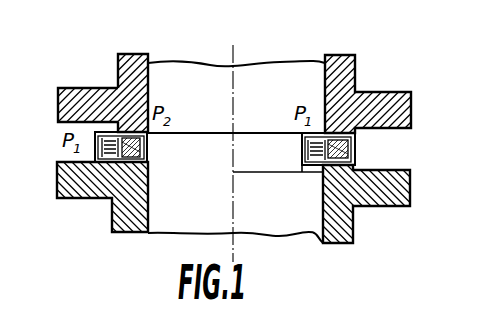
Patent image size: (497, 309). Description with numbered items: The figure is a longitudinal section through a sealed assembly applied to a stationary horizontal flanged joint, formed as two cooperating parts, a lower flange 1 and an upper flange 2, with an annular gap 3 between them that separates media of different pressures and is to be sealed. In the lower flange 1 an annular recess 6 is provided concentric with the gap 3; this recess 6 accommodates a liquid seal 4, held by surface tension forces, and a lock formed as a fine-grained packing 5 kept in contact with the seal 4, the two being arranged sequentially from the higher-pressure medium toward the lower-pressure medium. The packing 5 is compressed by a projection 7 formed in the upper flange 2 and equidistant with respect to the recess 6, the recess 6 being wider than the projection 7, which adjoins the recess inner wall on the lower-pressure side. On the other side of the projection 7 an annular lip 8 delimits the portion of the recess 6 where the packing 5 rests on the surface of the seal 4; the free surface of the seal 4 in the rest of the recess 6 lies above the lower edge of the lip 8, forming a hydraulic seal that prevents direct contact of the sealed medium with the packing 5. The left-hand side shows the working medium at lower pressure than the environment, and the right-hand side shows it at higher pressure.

The lower flange 1 is at (99, 185).
The upper flange 2 is at (90, 100).
The annular gap 3 is at (252, 132).
The liquid seal 4 is at (106, 182).
The fine-grained packing 5 is at (130, 140).
The annular recess 6 is at (354, 212).
The projection 7 is at (150, 102).
The annular lip 8 is at (145, 161).